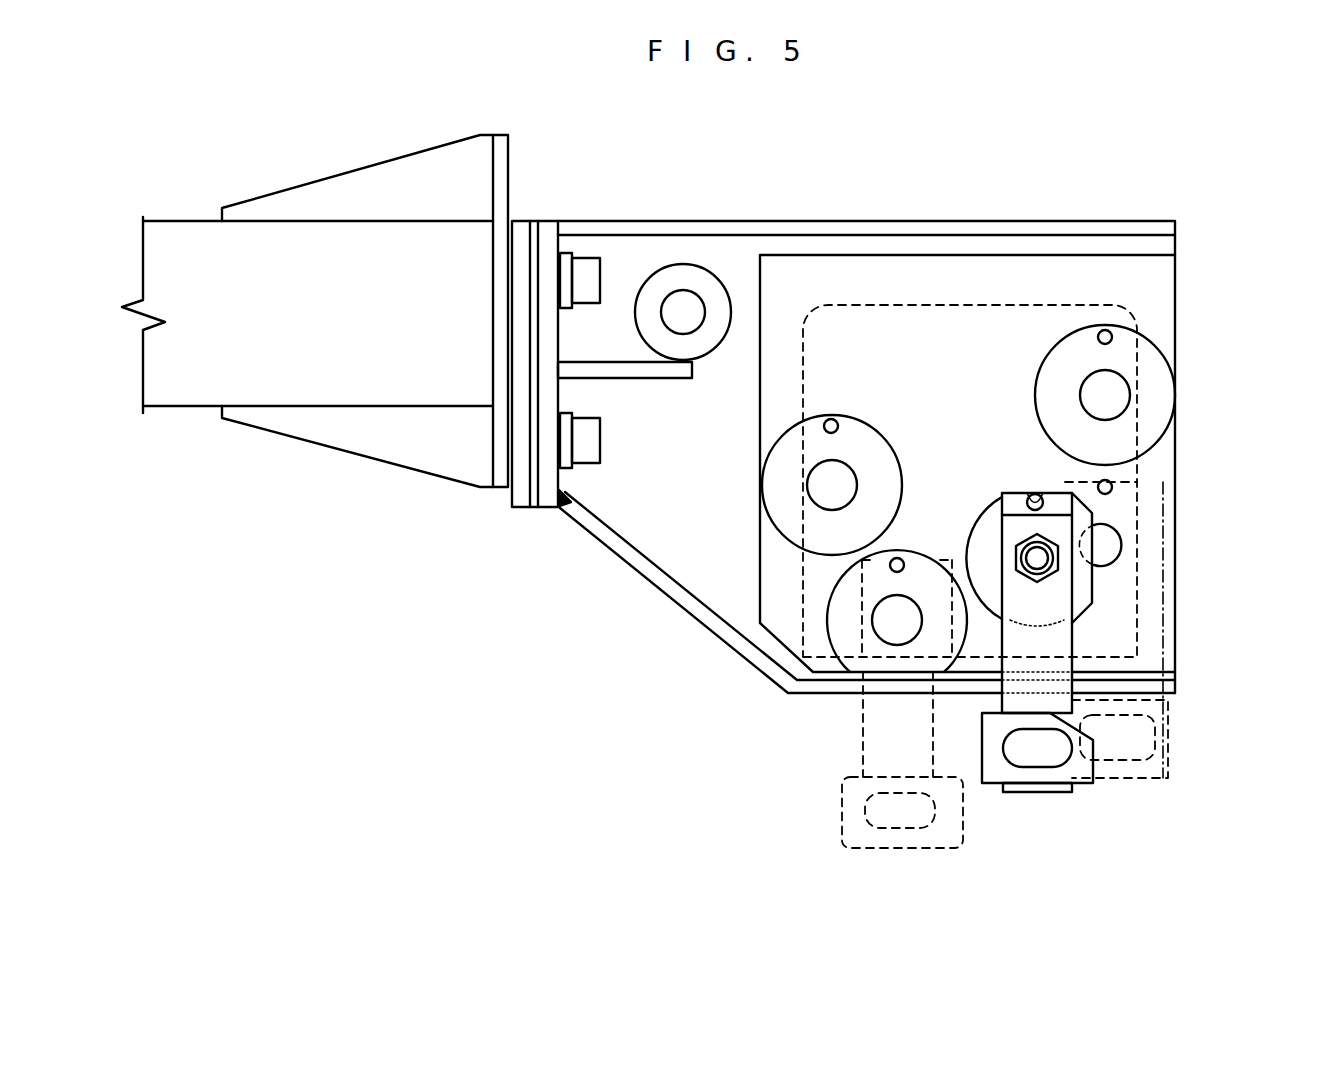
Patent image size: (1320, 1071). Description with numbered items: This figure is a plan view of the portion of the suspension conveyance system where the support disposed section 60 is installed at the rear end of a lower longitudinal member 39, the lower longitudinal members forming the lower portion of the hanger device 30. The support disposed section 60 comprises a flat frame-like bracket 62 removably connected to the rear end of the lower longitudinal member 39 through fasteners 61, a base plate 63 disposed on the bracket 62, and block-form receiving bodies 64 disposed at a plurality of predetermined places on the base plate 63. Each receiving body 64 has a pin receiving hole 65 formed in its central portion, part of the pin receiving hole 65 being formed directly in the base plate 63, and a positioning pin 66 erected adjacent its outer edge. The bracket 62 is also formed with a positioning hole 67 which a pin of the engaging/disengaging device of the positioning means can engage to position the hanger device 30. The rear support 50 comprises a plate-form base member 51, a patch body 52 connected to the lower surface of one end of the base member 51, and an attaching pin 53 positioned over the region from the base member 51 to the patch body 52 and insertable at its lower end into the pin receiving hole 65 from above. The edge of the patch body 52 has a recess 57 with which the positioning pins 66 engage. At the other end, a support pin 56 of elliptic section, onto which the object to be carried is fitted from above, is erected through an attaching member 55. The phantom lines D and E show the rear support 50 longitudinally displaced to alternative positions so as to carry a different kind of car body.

The hanger device 30 is at (200, 208).
The lower longitudinal member 39 is at (195, 368).
The rear support 50 is at (1108, 666).
The base member 51 is at (1046, 633).
The patch body 52 is at (1080, 587).
The attaching pin 53 is at (1046, 556).
The attaching member 55 is at (1000, 768).
The support pin 56 is at (1037, 755).
The recess 57 is at (1028, 495).
The support disposed section 60 is at (650, 590).
The fasteners 61 is at (588, 287).
The bracket 62 is at (636, 527).
The base plate 63 is at (920, 272).
The receiving body 64 is at (1153, 383).
The pin receiving hole 65 is at (845, 478).
The positioning pin 66 is at (832, 420).
The positioning hole 67 is at (690, 313).
The phantom-line position D is at (835, 822).
The phantom-line position E is at (1188, 741).